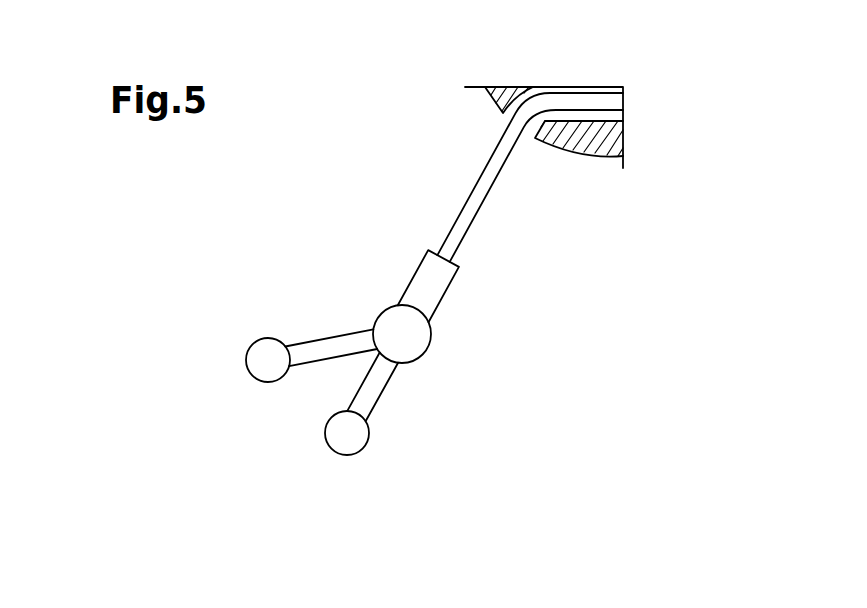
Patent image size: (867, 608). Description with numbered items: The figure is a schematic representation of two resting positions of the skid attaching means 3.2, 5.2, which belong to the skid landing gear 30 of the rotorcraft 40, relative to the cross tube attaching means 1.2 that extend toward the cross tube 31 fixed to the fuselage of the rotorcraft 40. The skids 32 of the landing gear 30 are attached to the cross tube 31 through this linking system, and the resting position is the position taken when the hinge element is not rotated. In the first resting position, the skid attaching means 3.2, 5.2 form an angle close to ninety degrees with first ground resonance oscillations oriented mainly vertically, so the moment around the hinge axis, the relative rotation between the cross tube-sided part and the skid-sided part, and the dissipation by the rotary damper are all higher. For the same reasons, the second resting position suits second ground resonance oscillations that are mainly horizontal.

The skid landing gear 30 is at (250, 260).
The cross tube 31 is at (494, 183).
The rotorcraft 40 is at (585, 172).
The cross tube attaching means 1.2 is at (432, 288).
The skid attaching means 3.2 is at (420, 355).
The skid attaching means 5.2 is at (325, 338).
The skid 32 is at (255, 358).